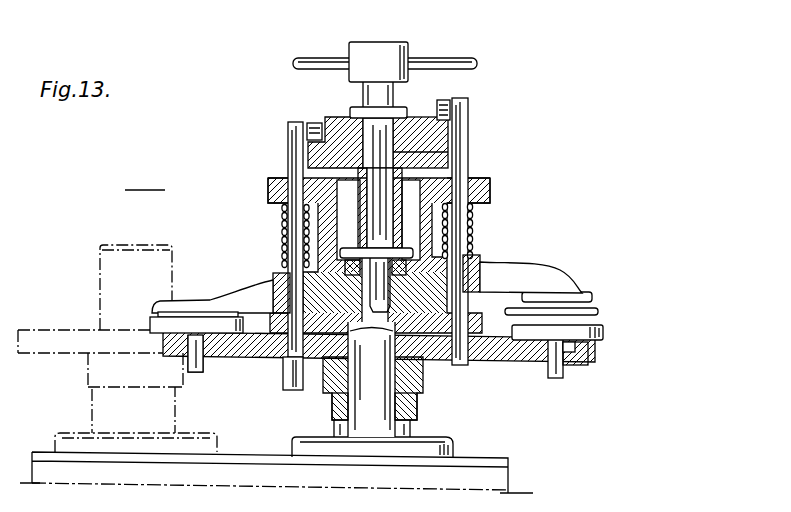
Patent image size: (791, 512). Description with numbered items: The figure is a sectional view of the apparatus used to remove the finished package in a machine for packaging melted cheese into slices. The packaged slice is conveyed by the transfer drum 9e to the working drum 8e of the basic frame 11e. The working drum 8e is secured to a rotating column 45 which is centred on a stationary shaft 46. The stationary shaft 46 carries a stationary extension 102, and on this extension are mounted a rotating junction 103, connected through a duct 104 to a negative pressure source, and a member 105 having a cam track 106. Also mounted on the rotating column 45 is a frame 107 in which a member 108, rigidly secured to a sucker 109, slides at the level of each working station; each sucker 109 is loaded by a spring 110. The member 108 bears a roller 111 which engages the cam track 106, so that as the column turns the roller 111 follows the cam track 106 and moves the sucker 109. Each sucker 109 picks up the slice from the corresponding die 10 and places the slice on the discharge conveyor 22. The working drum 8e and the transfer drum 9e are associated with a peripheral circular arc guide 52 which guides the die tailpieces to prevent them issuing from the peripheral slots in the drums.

The rotating junction 103 is at (380, 50).
The duct 104 is at (460, 62).
The roller 111 is at (312, 125).
The member having a cam track 105 is at (447, 137).
The stationary extension 102 is at (383, 147).
The cam track 106 is at (318, 152).
The spring 110 is at (283, 208).
The frame 107 is at (306, 232).
The sucker 109 is at (193, 308).
The die 10 is at (150, 322).
The transfer drum 9e is at (37, 347).
The member 108 is at (296, 376).
The rotating column 45 is at (332, 408).
The stationary shaft 46 is at (412, 410).
The working drum 8e is at (508, 370).
The guide 52 is at (583, 372).
The discharge conveyor 22 is at (590, 298).
The basic frame 11e is at (307, 301).